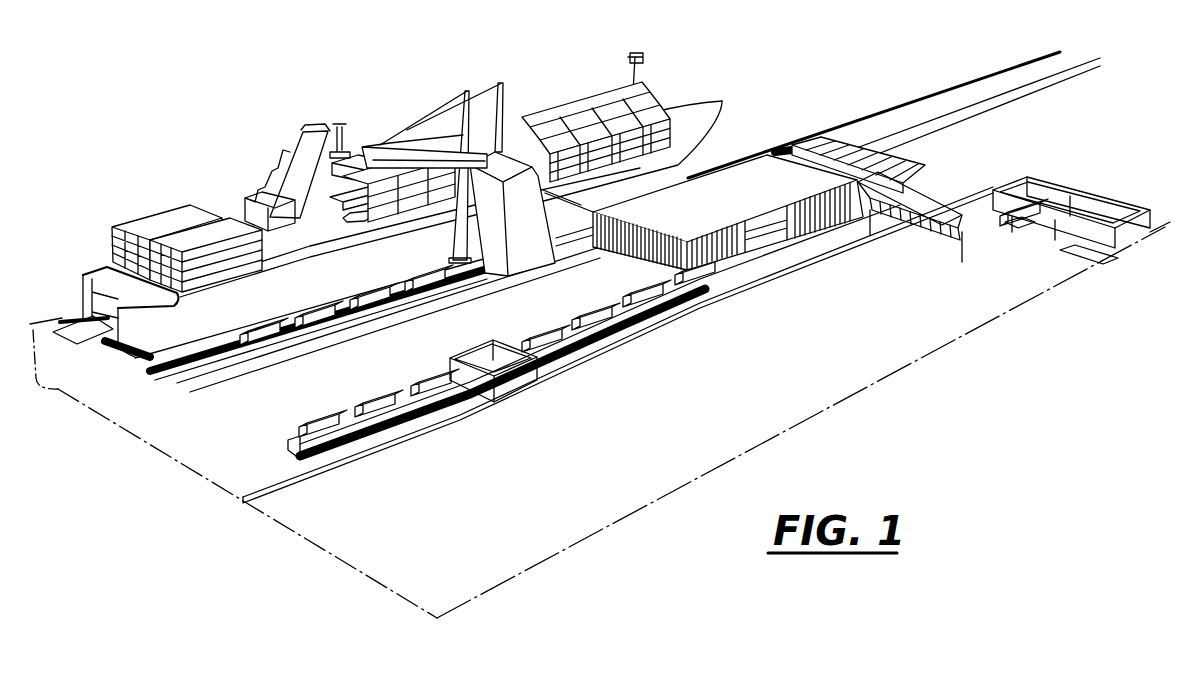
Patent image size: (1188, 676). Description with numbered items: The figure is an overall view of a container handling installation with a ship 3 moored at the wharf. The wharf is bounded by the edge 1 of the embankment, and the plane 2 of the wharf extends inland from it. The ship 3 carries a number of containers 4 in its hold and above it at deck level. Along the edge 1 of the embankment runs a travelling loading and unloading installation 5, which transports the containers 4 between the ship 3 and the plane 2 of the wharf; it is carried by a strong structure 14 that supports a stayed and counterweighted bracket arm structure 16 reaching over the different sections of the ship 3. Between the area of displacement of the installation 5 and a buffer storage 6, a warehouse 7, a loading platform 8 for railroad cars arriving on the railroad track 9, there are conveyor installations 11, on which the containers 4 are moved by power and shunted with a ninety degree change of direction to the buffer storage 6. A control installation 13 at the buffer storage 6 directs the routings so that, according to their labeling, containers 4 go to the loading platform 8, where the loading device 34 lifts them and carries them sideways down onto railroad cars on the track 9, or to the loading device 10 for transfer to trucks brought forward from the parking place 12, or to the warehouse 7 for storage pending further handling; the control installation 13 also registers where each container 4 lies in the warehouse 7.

The edge of the embankment 1 is at (893, 108).
The plane of the wharf 2 is at (985, 135).
The ship 3 is at (670, 113).
The containers 4 is at (540, 113).
The travelling loading and unloading installation 5 is at (467, 155).
The buffer storage 6 is at (832, 143).
The warehouse 7 is at (776, 178).
The loading platform 8 is at (400, 440).
The railroad track 9 is at (432, 424).
The loading device 10 is at (1058, 183).
The conveyor installations 11 is at (203, 353).
The parking place 12 is at (902, 332).
The control installation 13 is at (940, 205).
The structure 14 is at (495, 158).
The bracket arm structure 16 is at (400, 140).
The loading device 34 is at (523, 372).